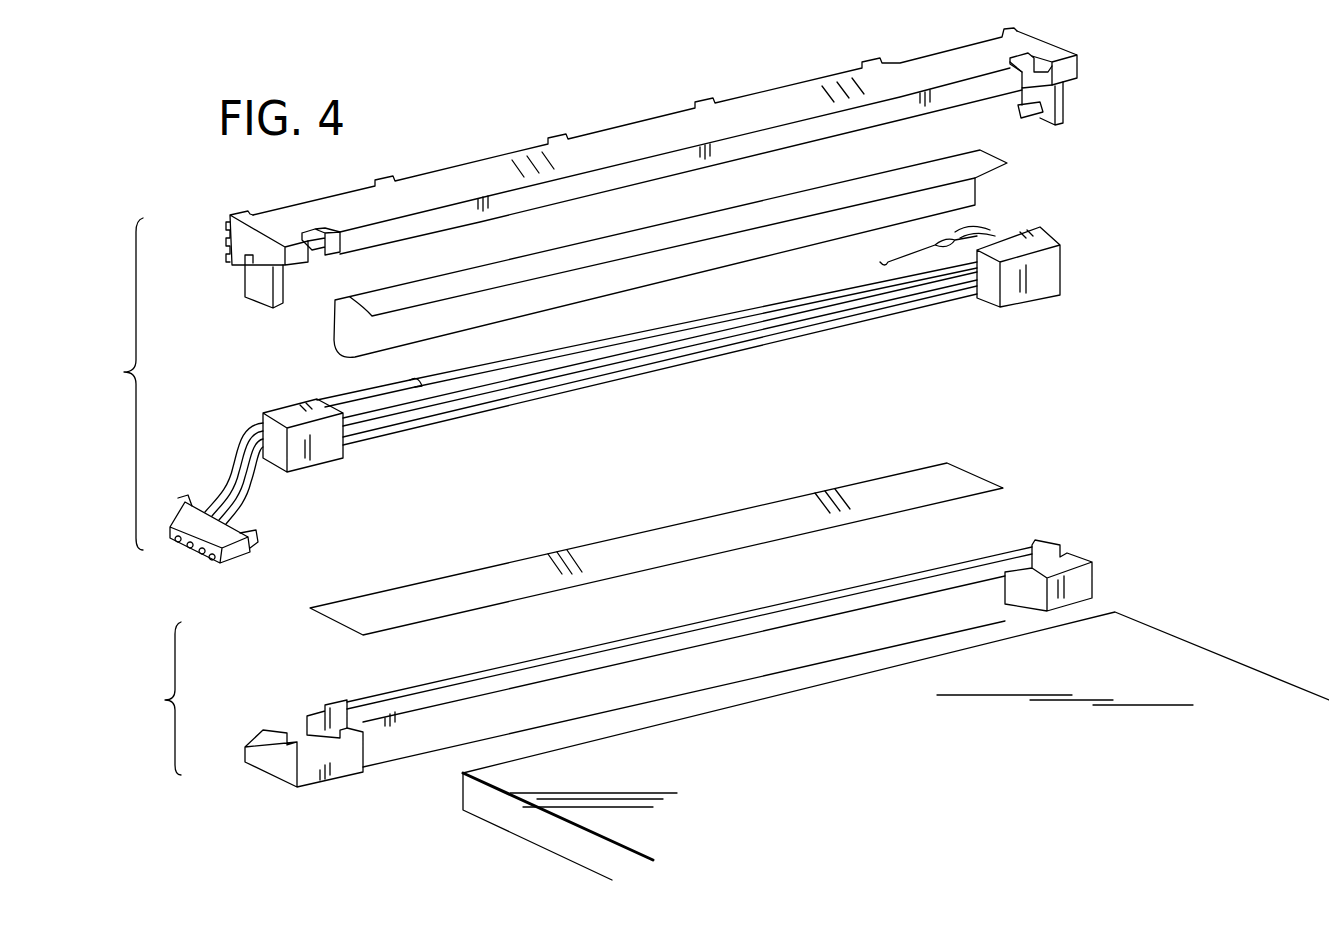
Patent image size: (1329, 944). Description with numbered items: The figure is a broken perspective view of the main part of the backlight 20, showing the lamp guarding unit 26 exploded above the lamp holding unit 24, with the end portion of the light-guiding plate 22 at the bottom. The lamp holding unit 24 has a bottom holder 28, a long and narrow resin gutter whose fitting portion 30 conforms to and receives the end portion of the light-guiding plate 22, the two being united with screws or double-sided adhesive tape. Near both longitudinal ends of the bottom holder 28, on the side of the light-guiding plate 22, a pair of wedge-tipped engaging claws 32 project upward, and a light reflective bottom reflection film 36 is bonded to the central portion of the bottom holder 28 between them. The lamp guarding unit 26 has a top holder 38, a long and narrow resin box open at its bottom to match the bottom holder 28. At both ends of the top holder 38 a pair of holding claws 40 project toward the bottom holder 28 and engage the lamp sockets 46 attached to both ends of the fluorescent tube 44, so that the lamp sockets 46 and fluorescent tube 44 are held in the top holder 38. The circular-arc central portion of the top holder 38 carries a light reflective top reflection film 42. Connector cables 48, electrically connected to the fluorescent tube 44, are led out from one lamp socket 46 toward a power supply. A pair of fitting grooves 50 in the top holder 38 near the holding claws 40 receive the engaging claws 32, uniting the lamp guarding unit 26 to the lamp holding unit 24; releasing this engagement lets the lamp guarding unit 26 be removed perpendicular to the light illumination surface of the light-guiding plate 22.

The backlight 20 is at (1152, 357).
The light-guiding plate 22 is at (525, 812).
The lamp holding unit 24 is at (155, 698).
The lamp guarding unit 26 is at (114, 384).
The bottom holder 28 is at (340, 778).
The fitting portion 30 is at (413, 735).
The engaging claws 32 is at (330, 705).
The bottom reflection film 36 is at (664, 522).
The top holder 38 is at (488, 165).
The holding claws 40 is at (258, 303).
The top reflection film 42 is at (982, 185).
The fluorescent tube 44 is at (540, 398).
The lamp sockets 46 is at (322, 455).
The connector cables 48 is at (232, 452).
The fitting grooves 50 is at (319, 230).